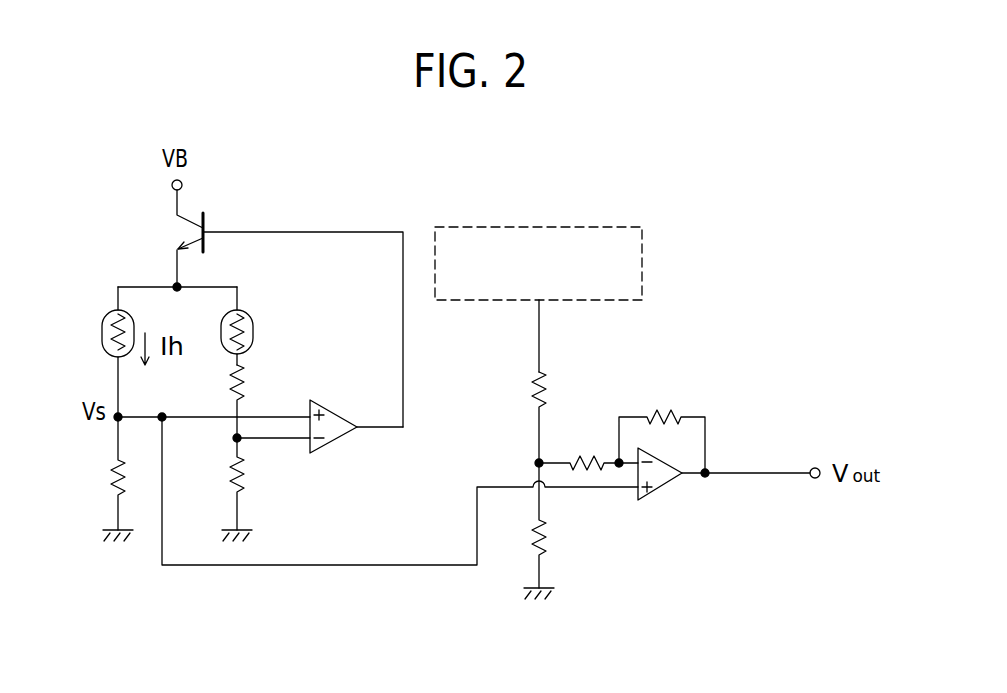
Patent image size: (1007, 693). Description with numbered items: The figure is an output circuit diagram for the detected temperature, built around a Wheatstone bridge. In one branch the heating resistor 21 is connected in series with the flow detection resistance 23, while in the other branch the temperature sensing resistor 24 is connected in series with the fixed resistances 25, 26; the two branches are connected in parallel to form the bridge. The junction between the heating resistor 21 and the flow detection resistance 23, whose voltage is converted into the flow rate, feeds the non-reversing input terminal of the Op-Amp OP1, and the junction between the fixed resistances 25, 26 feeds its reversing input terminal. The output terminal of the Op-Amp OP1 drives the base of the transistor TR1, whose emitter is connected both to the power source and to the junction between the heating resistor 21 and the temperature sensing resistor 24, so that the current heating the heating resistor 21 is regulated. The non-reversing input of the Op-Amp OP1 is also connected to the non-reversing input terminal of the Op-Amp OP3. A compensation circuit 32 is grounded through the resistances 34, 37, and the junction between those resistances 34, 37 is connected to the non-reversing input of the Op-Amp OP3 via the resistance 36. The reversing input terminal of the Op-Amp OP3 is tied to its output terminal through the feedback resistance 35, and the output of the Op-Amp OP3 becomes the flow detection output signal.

The heating resistor 21 is at (102, 340).
The flow detection resistance 23 is at (110, 472).
The temperature sensing resistor 24 is at (254, 332).
The fixed resistance 25 is at (244, 380).
The fixed resistance 26 is at (244, 478).
The compensation circuit 32 is at (644, 262).
The resistance 34 is at (532, 392).
The resistance 35 is at (661, 410).
The resistance 36 is at (587, 456).
The resistance 37 is at (548, 536).
The transistor TR1 is at (204, 223).
The Op-Amp OP1 is at (340, 452).
The Op-Amp OP3 is at (658, 492).